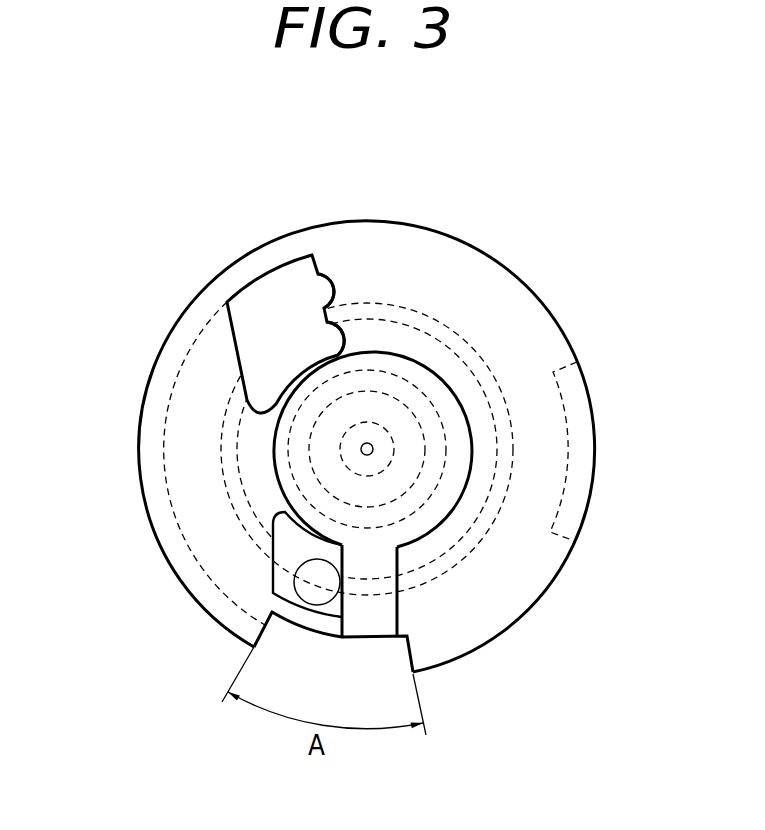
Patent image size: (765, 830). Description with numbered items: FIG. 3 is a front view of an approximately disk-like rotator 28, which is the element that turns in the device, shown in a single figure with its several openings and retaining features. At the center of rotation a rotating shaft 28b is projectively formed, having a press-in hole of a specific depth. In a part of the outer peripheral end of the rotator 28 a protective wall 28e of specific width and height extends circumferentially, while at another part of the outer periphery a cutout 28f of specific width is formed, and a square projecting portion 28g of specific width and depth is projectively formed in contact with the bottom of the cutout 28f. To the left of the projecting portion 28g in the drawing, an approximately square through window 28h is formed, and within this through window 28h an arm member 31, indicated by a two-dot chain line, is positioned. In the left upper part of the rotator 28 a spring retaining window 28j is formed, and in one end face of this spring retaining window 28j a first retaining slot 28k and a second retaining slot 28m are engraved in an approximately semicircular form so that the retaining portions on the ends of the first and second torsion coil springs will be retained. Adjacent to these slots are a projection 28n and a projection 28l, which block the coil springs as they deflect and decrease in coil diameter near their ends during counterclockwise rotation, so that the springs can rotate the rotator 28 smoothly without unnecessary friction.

The rotator 28 is at (303, 206).
The rotating shaft 28b is at (413, 473).
The protective wall 28e is at (578, 385).
The cutout 28f is at (360, 647).
The projecting portion 28g is at (393, 605).
The through window 28h is at (283, 533).
The spring retaining window 28j is at (260, 297).
The first retaining slot 28k is at (342, 337).
The projection 28l is at (441, 318).
The second retaining slot 28m is at (331, 283).
The projection 28n is at (436, 385).
The arm member 31 is at (295, 587).